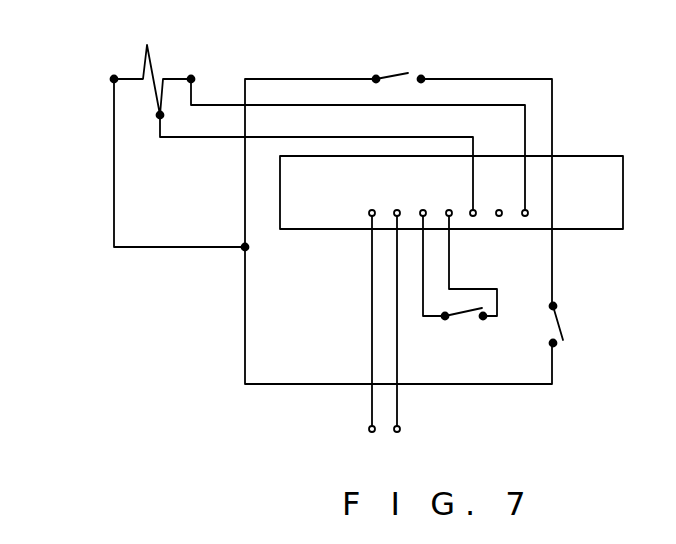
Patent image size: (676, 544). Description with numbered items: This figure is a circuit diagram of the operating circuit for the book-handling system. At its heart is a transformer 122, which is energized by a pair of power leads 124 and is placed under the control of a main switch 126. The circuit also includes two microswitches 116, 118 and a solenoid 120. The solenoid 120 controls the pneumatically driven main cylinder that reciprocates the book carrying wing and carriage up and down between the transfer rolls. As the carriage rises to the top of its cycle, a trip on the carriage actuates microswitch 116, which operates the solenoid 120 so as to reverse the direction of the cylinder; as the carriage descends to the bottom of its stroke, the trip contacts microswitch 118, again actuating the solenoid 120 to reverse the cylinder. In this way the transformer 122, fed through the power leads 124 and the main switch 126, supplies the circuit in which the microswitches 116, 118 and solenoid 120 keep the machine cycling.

The microswitch 116 is at (466, 318).
The microswitch 118 is at (562, 323).
The solenoid 120 is at (145, 65).
The transformer 122 is at (327, 222).
The power leads 124 is at (371, 413).
The main switch 126 is at (402, 72).